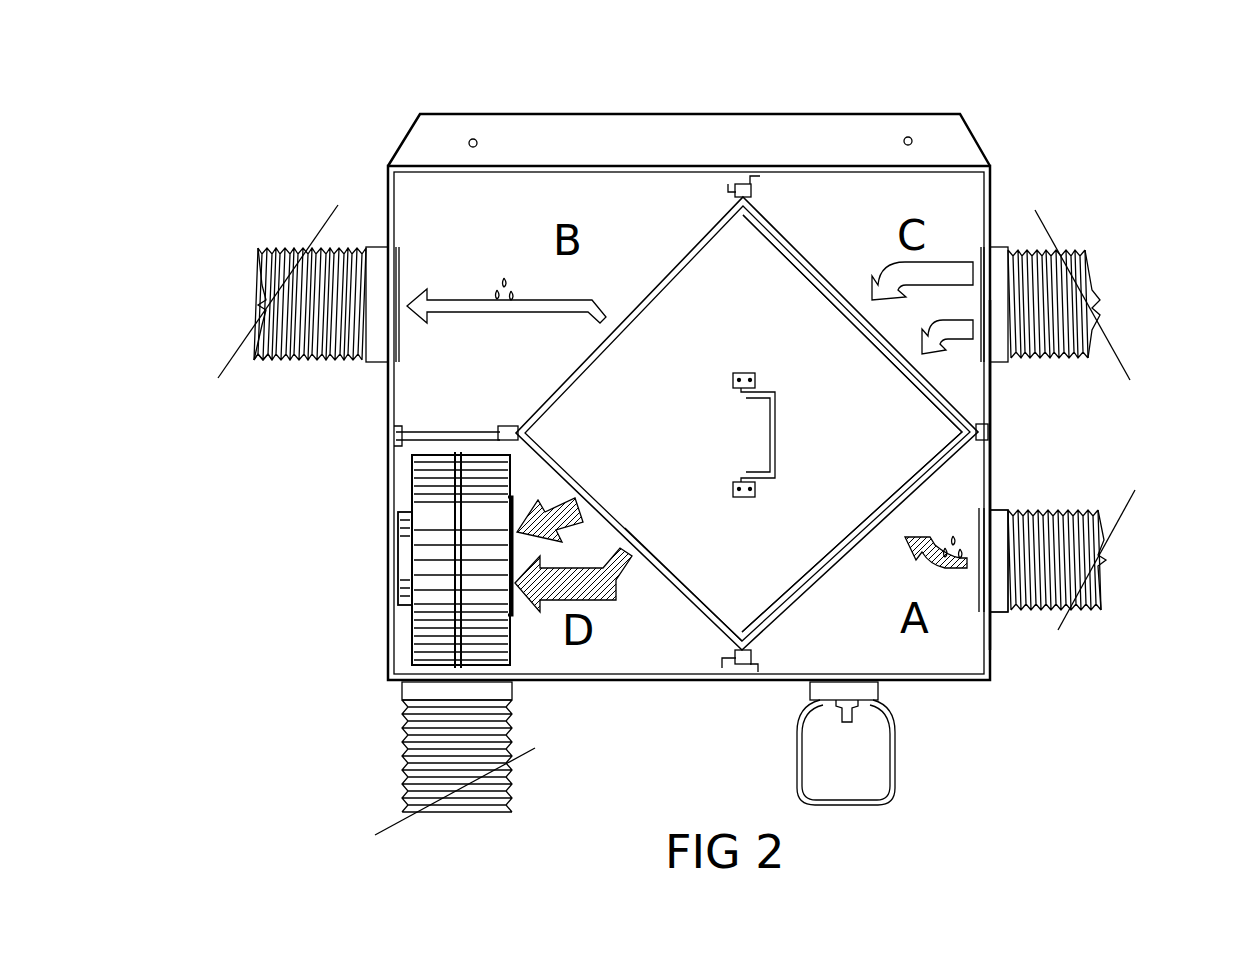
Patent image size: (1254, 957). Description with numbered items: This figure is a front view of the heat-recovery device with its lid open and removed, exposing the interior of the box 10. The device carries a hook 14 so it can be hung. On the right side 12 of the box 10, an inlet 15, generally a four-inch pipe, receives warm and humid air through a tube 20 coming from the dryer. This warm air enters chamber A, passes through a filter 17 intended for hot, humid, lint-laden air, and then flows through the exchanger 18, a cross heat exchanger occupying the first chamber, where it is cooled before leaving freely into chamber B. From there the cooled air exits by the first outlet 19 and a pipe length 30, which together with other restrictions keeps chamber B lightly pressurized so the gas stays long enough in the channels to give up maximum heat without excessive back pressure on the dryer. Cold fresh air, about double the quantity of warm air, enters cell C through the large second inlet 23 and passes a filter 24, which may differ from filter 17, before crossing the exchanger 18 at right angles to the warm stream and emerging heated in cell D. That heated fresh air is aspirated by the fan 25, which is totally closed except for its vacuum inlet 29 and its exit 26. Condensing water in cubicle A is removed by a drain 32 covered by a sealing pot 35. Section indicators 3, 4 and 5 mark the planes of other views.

The section line 3- 3 is at (1225, 272).
The section line 4- 4 is at (204, 255).
The section line 5- 5 is at (636, 745).
The box 10 is at (962, 682).
The right side 12 is at (994, 644).
The hook 14 is at (852, 132).
The inlet 15 is at (997, 522).
The filter 17 is at (975, 490).
The exchanger 18 is at (725, 603).
The first outlet 19 is at (382, 262).
The tube 20 is at (1100, 522).
The second inlet 23 is at (1000, 352).
The filter 24 is at (968, 402).
The fan 25 is at (432, 492).
The exit 26 is at (495, 695).
The vacuum inlet 29 is at (520, 548).
The pipe length 30 is at (318, 345).
The drain 32 is at (858, 712).
The sealing pot 35 is at (868, 752).